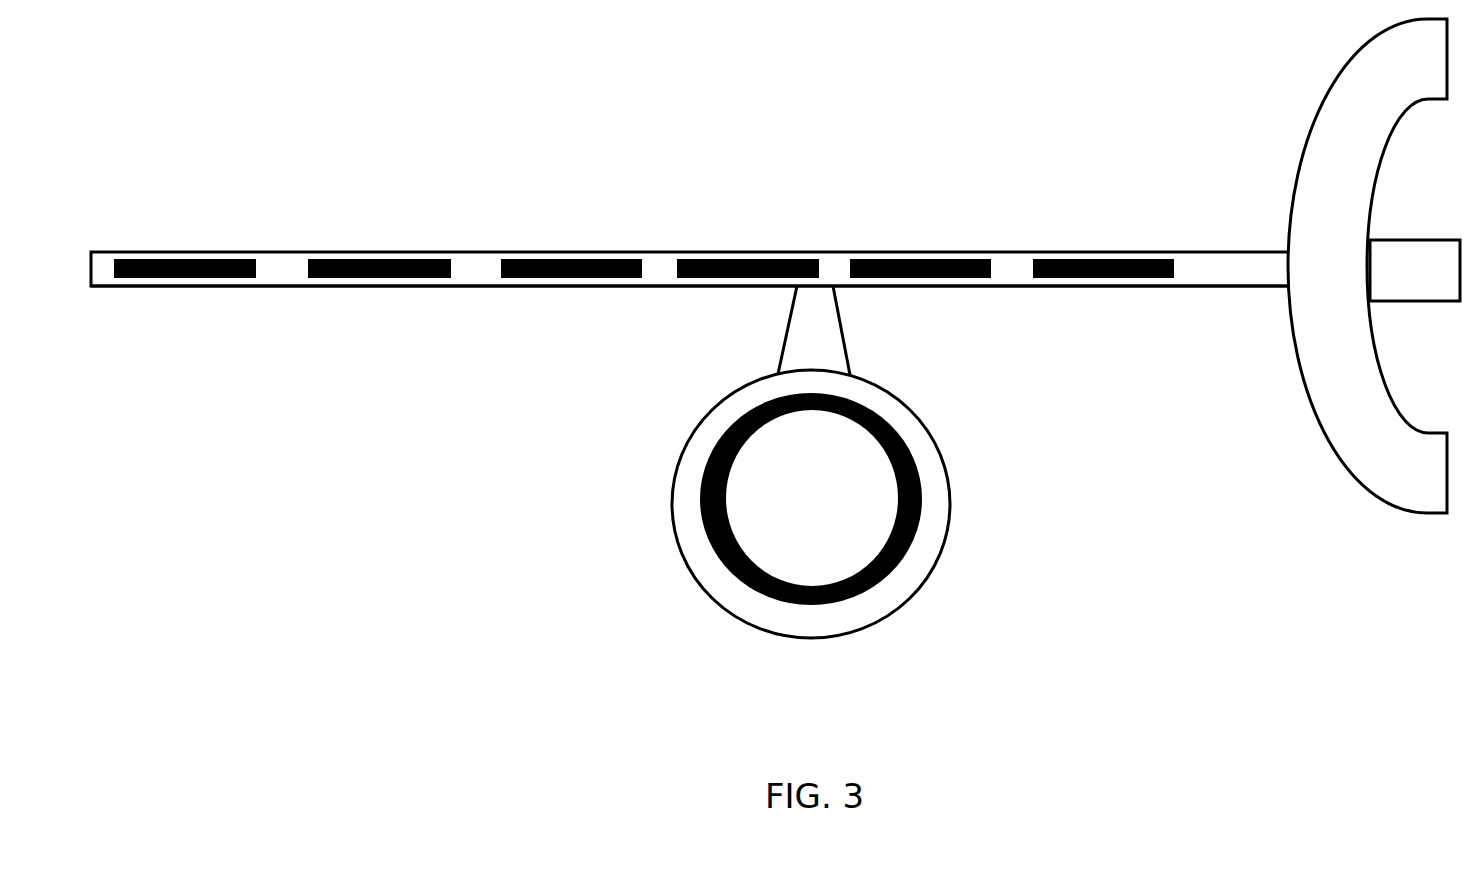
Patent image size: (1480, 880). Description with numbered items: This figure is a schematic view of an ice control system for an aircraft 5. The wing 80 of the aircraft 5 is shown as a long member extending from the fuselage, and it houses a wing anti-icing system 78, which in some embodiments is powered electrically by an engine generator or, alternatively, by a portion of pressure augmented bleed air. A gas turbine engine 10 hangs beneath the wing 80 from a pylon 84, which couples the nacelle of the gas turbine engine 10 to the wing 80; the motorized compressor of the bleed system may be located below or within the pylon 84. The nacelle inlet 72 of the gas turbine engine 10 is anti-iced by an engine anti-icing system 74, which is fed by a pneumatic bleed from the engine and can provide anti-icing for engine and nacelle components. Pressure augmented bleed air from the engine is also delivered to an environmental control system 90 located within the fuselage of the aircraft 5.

The aircraft 5 is at (1337, 234).
The gas turbine engine 10 is at (808, 504).
The nacelle inlet 72 is at (678, 524).
The engine anti-icing system 74 is at (918, 527).
The wing anti-icing system 78 is at (202, 252).
The wing 80 is at (287, 286).
The pylon 84 is at (843, 328).
The environmental control system 90 is at (1438, 301).